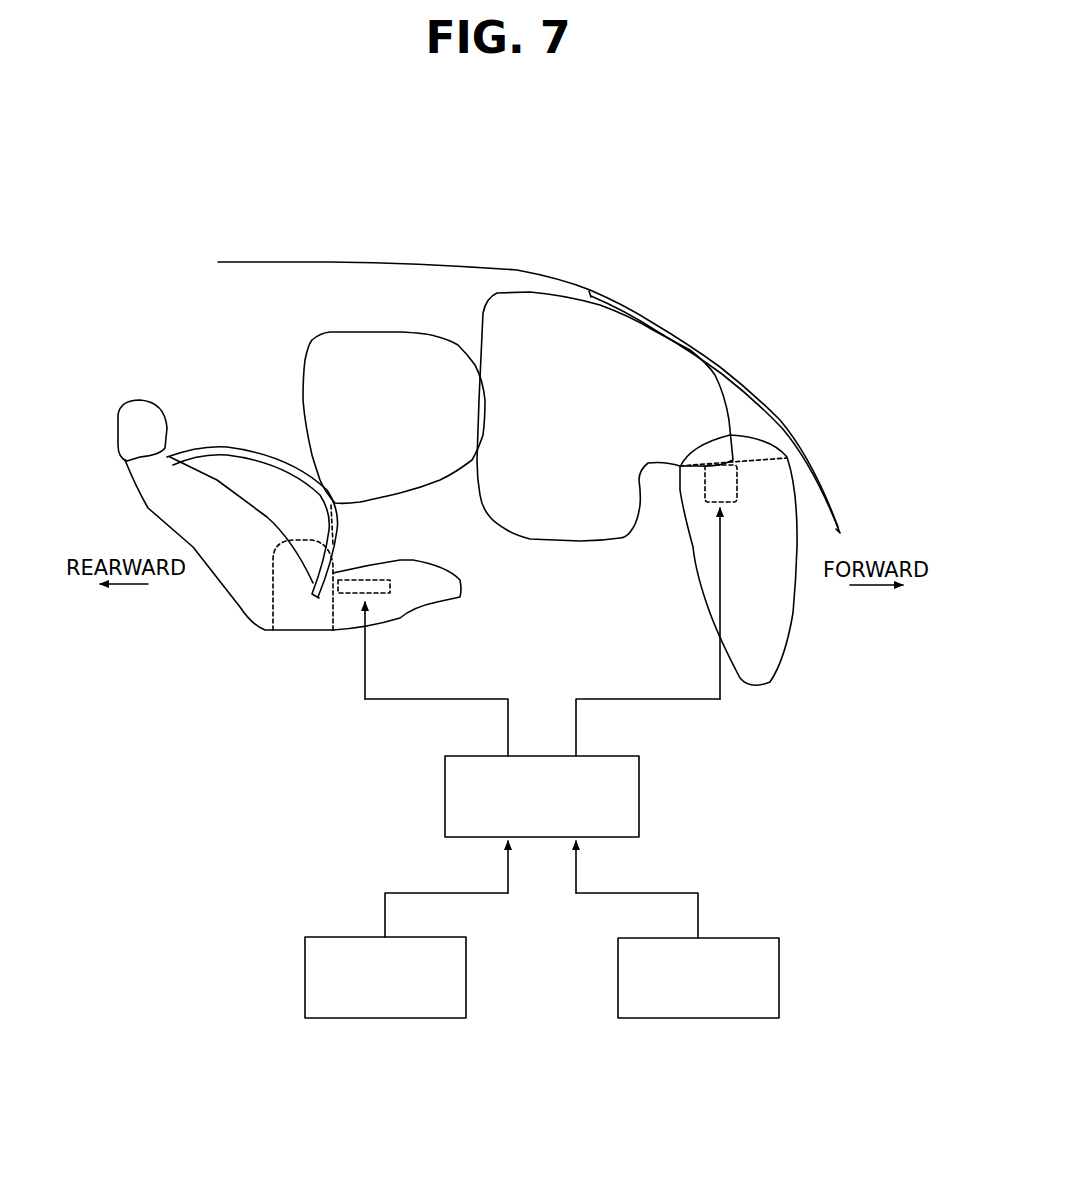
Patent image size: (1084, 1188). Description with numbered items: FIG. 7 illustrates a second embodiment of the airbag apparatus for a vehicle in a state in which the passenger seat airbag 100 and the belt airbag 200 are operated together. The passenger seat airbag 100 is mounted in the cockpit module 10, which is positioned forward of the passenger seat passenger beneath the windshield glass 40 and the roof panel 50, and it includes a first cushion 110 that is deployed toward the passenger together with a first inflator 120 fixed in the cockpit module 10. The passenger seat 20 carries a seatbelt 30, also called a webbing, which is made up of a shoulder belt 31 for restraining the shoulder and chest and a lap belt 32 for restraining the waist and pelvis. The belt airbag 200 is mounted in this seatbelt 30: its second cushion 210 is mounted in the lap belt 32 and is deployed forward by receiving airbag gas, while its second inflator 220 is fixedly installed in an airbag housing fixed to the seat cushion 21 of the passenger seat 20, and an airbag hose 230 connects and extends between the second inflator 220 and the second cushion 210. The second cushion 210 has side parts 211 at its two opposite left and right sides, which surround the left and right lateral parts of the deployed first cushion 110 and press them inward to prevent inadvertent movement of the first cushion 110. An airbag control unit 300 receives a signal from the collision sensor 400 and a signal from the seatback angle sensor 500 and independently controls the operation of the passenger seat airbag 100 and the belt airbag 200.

The cockpit module 10 is at (783, 637).
The passenger seat 20 is at (228, 607).
The seat cushion 21 is at (445, 588).
The seatbelt 30 is at (202, 436).
The shoulder belt 31 is at (242, 452).
The lap belt 32 is at (273, 630).
The windshield glass 40 is at (718, 392).
The roof panel 50 is at (447, 262).
The passenger seat airbag 100 is at (742, 388).
The first cushion 110 is at (613, 350).
The first inflator 120 is at (720, 483).
The belt airbag 200 is at (316, 320).
The second cushion 210 is at (377, 350).
The side parts 211 is at (485, 412).
The second inflator 220 is at (338, 594).
The airbag hose 230 is at (340, 552).
The airbag control unit 300 is at (640, 795).
The collision sensor 400 is at (780, 977).
The seatback angle sensor 500 is at (305, 977).